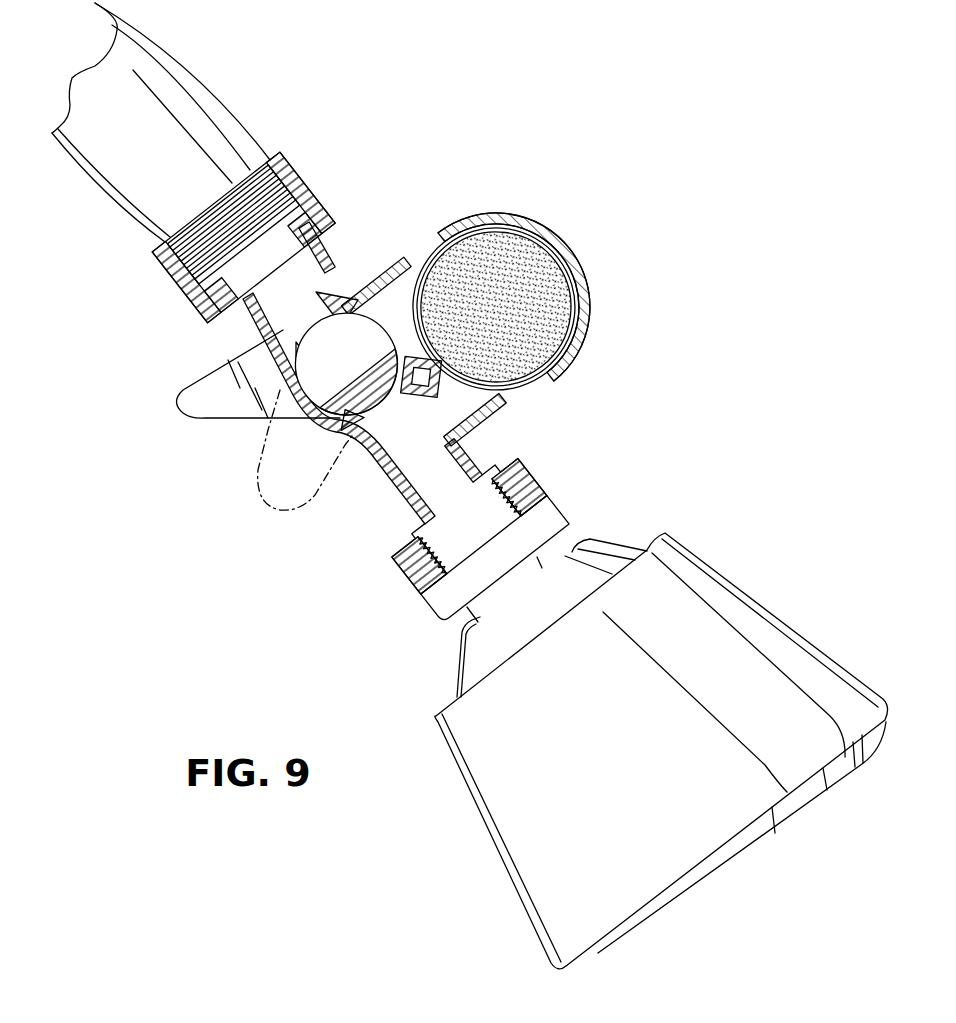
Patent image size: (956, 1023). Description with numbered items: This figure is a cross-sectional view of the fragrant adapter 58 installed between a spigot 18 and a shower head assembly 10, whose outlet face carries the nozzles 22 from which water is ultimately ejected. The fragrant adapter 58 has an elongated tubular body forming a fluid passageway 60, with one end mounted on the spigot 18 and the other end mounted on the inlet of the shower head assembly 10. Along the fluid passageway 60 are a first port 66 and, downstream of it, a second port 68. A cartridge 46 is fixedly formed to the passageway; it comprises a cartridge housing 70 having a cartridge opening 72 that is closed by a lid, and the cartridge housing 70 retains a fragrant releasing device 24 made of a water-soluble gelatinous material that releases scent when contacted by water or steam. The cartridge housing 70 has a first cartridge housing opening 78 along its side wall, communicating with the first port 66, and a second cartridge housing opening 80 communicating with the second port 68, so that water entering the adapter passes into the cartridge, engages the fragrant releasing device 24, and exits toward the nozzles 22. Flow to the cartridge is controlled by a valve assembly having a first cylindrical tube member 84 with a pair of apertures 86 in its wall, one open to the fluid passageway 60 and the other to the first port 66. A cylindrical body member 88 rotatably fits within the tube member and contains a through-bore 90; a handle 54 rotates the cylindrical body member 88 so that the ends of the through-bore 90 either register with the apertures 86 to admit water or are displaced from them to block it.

The shower head assembly 10 is at (813, 591).
The spigot 18 is at (228, 108).
The nozzles 22 is at (678, 912).
The fragrant releasing device 24 is at (514, 318).
The cartridge 46 is at (495, 222).
The handle 54 is at (205, 408).
The fragrant adapter 58 is at (584, 224).
The fluid passageway 60 is at (390, 473).
The first port 66 is at (370, 337).
The second port 68 is at (457, 427).
The cartridge housing 70 is at (577, 337).
The cartridge opening 72 is at (580, 287).
The first cartridge housing opening 78 is at (403, 287).
The second cartridge housing opening 80 is at (493, 403).
The first cylindrical tube member 84 is at (263, 317).
The pair of apertures 86 is at (313, 323).
The cylindrical body member 88 is at (373, 405).
The through-bore 90 is at (340, 433).